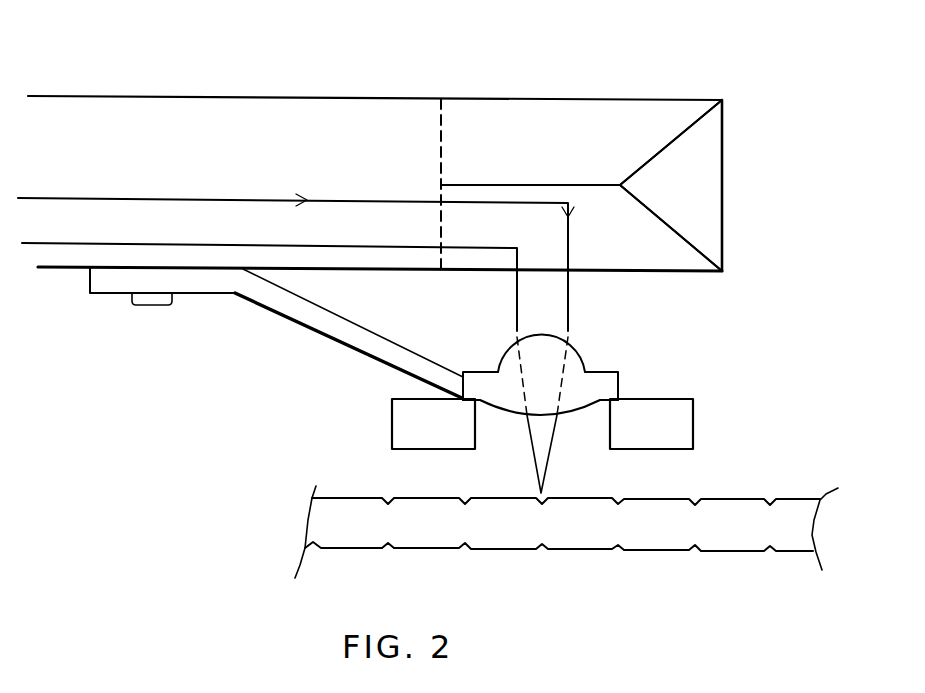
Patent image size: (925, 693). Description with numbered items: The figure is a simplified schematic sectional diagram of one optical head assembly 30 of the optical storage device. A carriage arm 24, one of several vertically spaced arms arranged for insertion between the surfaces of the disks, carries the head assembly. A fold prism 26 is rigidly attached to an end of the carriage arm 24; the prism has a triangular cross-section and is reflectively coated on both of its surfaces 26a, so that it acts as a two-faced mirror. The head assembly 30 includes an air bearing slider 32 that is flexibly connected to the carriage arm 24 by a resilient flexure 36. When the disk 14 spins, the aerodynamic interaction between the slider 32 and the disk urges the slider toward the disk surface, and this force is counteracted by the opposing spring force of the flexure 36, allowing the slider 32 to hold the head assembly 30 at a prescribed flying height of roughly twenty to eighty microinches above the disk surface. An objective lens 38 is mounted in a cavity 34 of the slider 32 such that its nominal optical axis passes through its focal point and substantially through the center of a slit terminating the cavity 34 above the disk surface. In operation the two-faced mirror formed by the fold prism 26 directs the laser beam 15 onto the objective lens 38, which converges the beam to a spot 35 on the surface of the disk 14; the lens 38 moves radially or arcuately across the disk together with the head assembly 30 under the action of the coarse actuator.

The disk 14 is at (800, 500).
The laser beam 15 is at (101, 201).
The carriage arm 24 is at (258, 98).
The fold prism 26 is at (630, 100).
The reflectively coated surfaces 26a is at (535, 108).
The optical head assembly 30 is at (780, 352).
The air bearing slider 32 is at (695, 418).
The cavity 34 is at (506, 402).
The focused light spot 35 is at (543, 443).
The resilient flexure 36 is at (328, 338).
The objective lens 38 is at (582, 347).